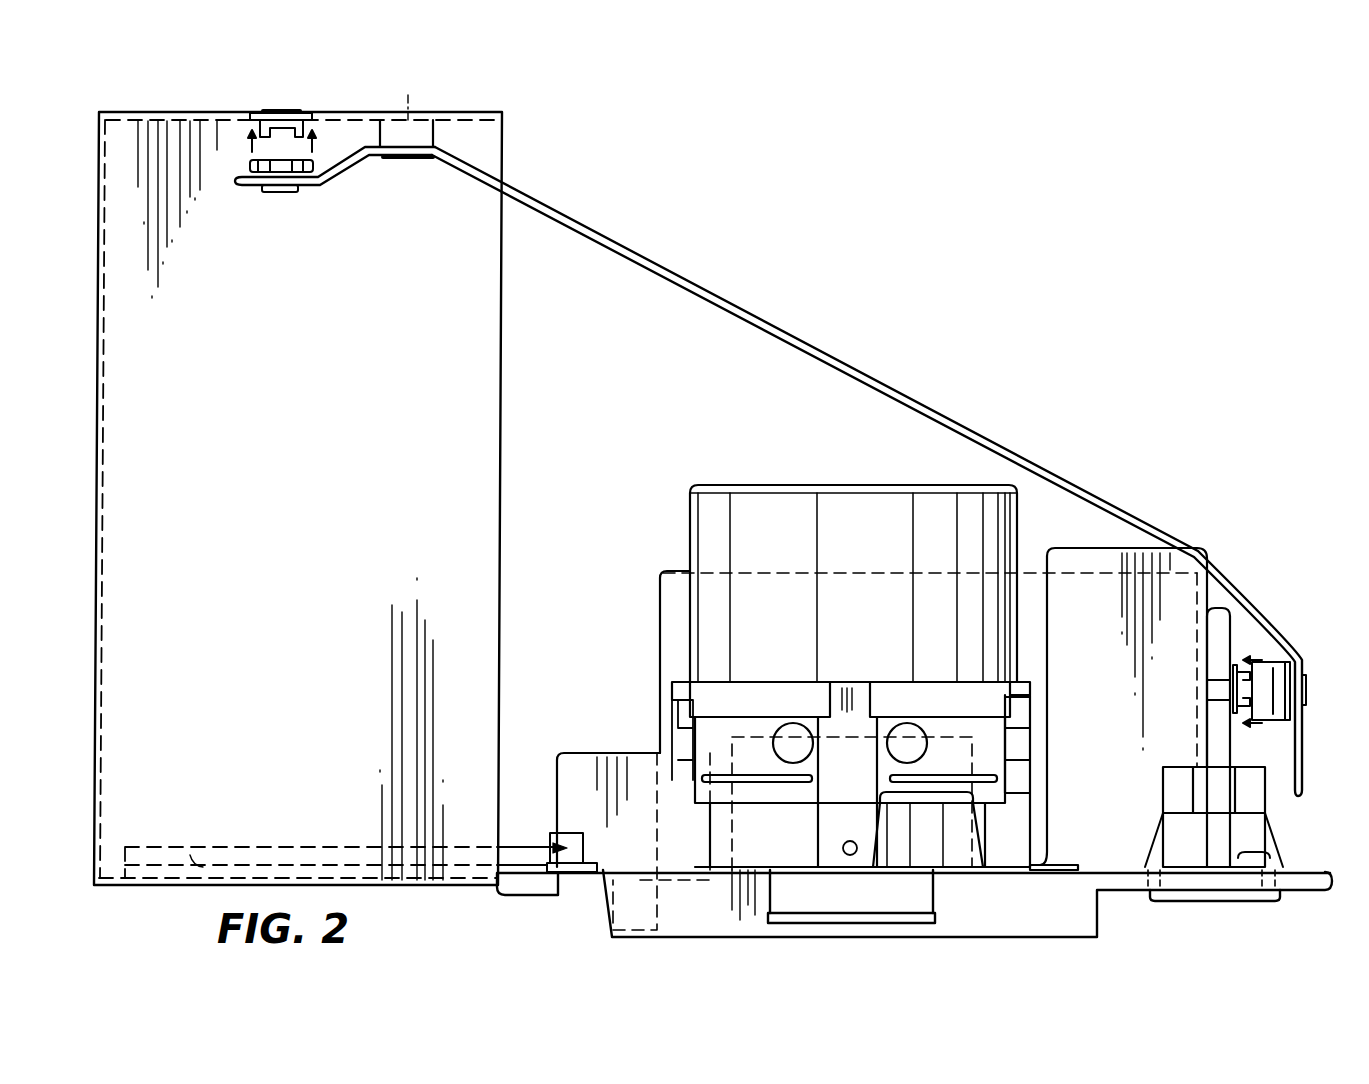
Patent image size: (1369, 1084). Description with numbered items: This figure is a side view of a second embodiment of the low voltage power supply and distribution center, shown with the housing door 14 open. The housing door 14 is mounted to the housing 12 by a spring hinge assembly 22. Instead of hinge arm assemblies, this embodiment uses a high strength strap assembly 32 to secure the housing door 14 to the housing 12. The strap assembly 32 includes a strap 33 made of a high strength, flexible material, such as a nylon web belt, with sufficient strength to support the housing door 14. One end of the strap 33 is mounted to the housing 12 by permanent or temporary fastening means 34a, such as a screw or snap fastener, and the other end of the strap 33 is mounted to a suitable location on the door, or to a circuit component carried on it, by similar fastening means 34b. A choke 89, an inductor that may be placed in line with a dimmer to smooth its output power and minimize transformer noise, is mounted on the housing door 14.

The housing 12 is at (98, 128).
The housing door 14 is at (1073, 893).
The spring hinge assembly 22 is at (302, 836).
The strap assembly 32 is at (768, 445).
The strap 33 is at (893, 382).
The fastening means 34a is at (278, 195).
The fastening means 34b is at (1306, 690).
The choke 89 is at (1125, 678).